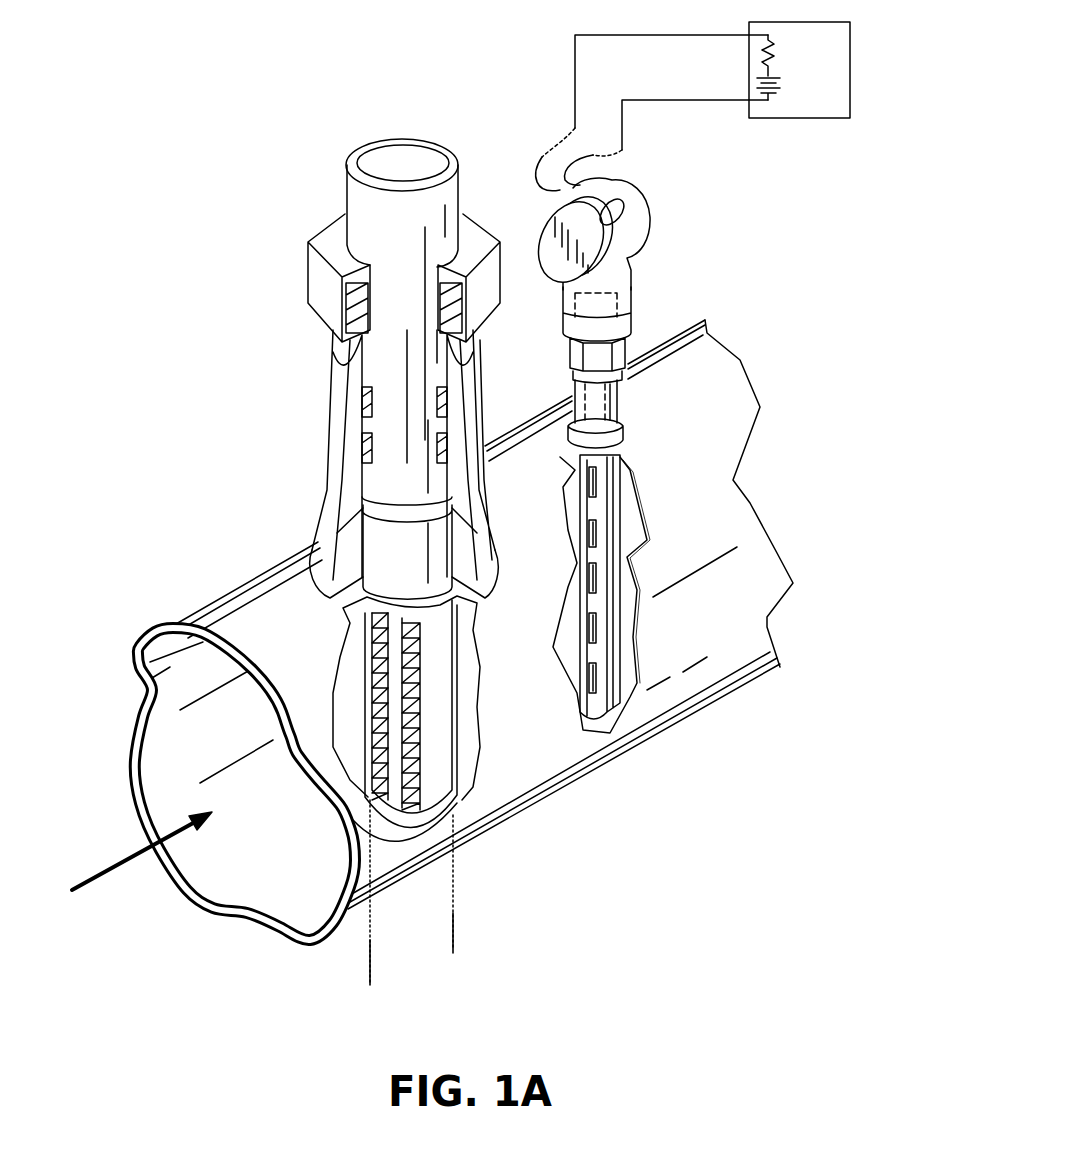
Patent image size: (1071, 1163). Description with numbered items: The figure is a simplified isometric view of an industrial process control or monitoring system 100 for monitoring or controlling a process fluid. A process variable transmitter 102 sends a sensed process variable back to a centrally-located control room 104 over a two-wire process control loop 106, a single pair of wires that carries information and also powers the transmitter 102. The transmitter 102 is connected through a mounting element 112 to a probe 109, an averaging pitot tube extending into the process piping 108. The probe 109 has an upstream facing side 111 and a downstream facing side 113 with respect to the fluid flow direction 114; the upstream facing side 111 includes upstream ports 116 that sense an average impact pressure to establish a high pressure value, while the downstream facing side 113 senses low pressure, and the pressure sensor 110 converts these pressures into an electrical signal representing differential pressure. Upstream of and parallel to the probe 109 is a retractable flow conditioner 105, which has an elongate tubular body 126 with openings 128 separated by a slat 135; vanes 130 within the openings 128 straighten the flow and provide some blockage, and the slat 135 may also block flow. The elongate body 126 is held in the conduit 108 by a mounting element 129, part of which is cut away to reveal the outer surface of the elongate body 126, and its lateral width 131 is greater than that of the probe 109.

The industrial process control or monitoring system 100 is at (200, 237).
The process variable transmitter 102 is at (630, 227).
The control room 104 is at (790, 60).
The retractable flow conditioner 105 is at (305, 651).
The two-wire process control loop 106 is at (620, 122).
The process piping 108 is at (692, 393).
The probe 109 is at (645, 522).
The pressure sensor 110 is at (570, 302).
The upstream facing side 111 is at (592, 653).
The mounting element 112 is at (620, 400).
The downstream facing side 113 is at (623, 647).
The fluid flow direction 114 is at (124, 866).
The upstream ports 116 is at (590, 578).
The elongate body 126 is at (433, 740).
The openings 128 is at (365, 765).
The mounting element 129 is at (335, 427).
The vanes 130 is at (382, 638).
The lateral width 131 is at (330, 977).
The slat 135 is at (392, 708).